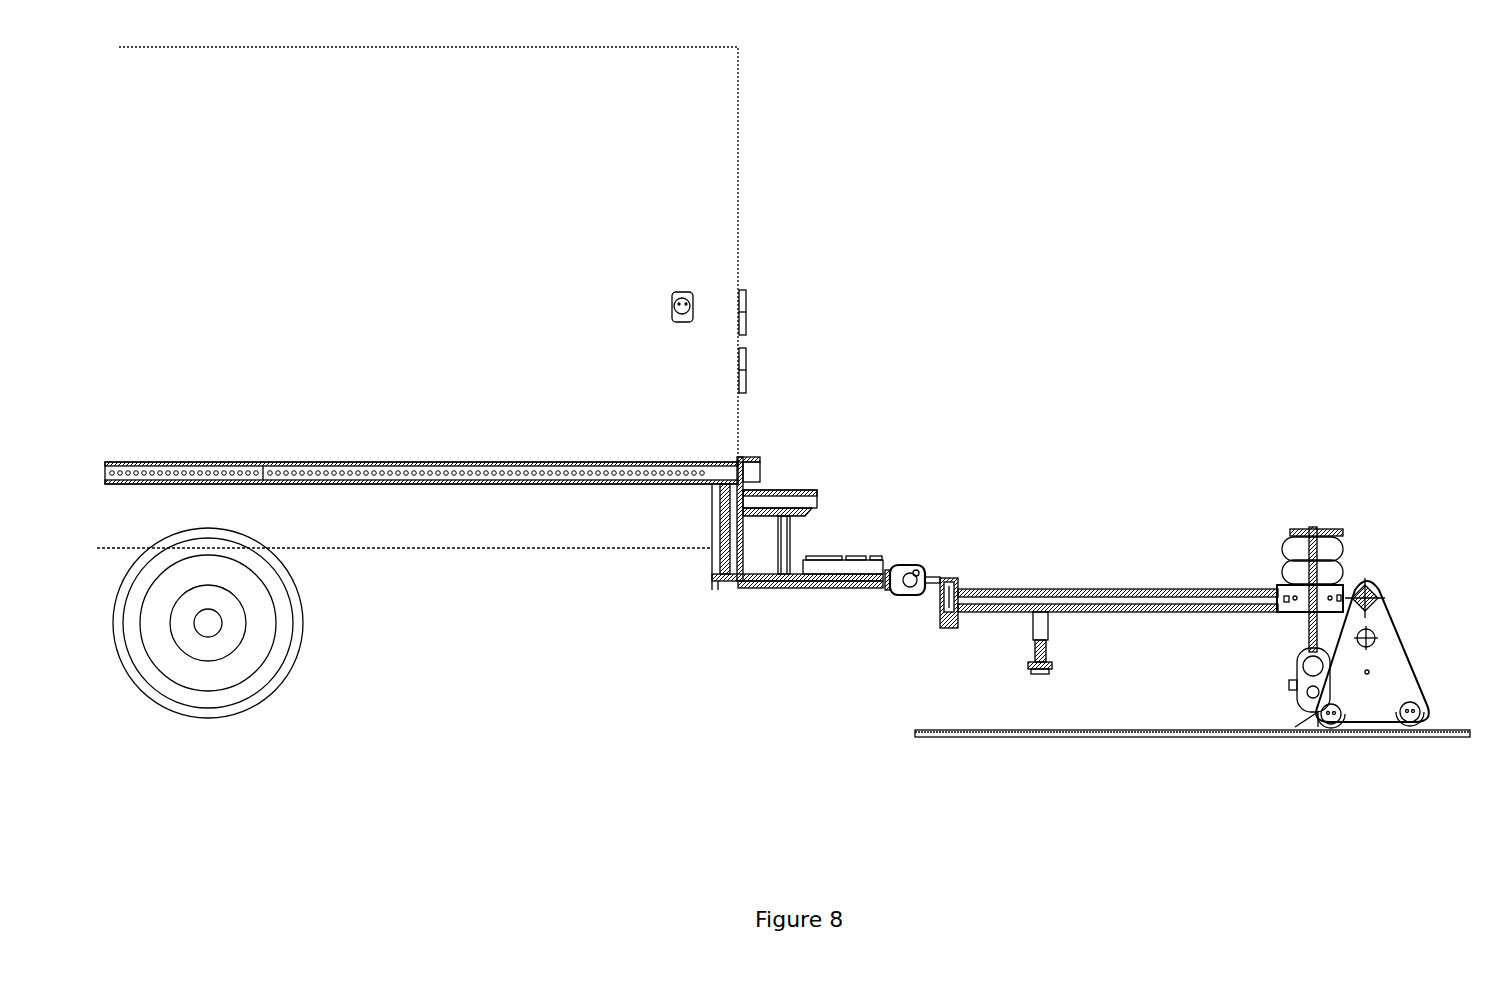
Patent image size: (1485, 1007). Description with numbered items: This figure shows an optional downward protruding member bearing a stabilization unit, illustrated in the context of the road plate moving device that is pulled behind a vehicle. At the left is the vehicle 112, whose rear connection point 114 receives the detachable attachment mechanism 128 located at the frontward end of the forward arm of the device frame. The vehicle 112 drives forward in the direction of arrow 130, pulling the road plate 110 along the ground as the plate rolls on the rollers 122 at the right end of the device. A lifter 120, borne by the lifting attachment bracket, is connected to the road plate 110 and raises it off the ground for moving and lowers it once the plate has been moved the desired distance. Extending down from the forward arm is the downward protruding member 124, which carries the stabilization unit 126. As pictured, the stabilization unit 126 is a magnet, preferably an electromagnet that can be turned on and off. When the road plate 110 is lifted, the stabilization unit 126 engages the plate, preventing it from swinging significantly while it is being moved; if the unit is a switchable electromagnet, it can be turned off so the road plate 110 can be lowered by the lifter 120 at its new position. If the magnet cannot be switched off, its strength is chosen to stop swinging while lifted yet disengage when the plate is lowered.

The road plate 110 is at (1040, 738).
The vehicle 112 is at (560, 217).
The connection point 114 is at (867, 637).
The lifter 120 is at (1300, 527).
The rollers 122 is at (1372, 705).
The downward protruding member 124 is at (1010, 670).
The stabilization unit 126 is at (1055, 673).
The detachable attachment mechanism 128 is at (907, 555).
The arrow 130 is at (140, 283).